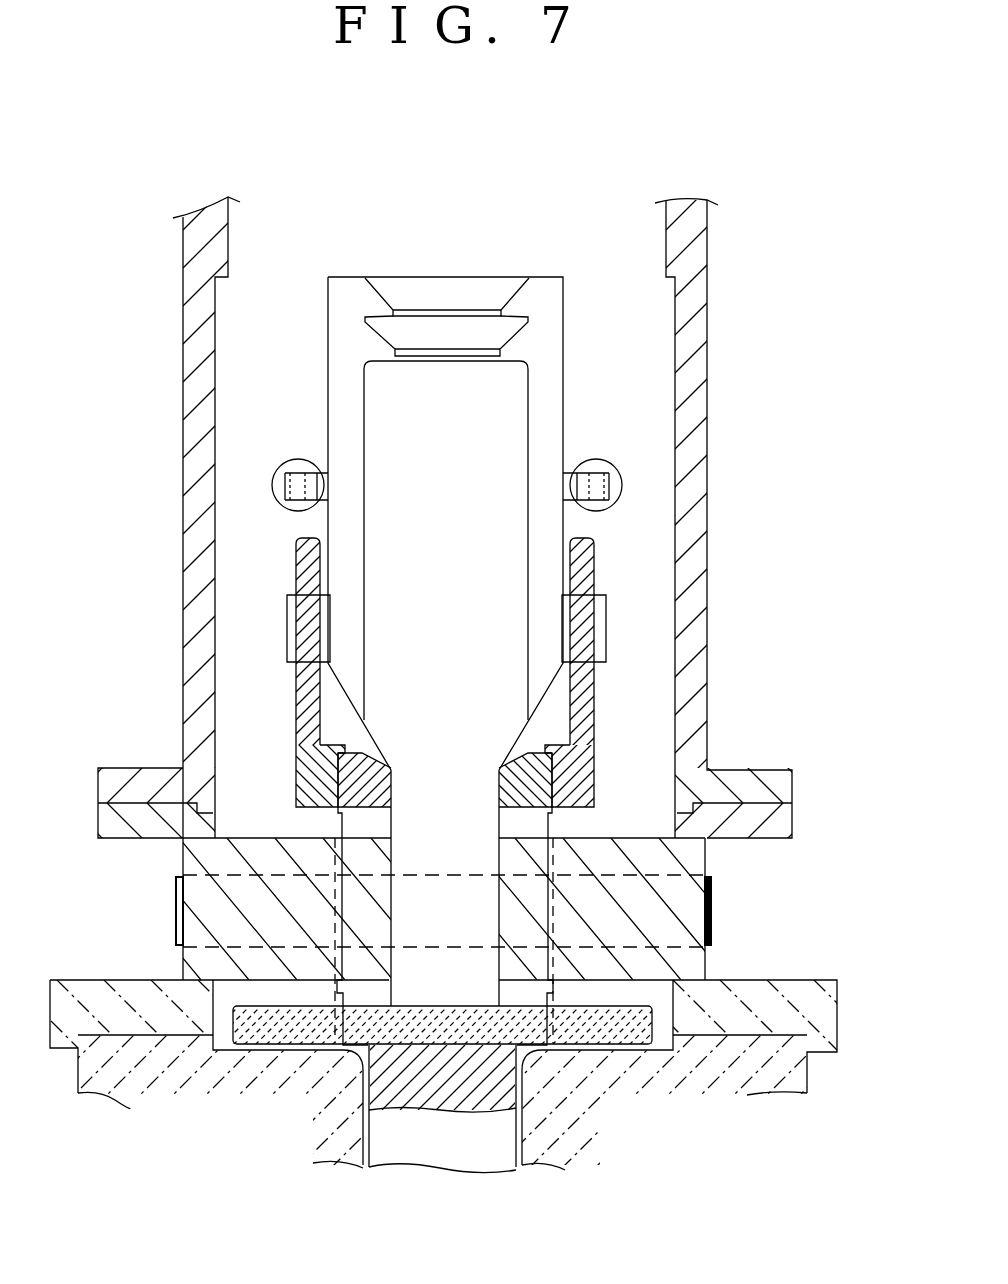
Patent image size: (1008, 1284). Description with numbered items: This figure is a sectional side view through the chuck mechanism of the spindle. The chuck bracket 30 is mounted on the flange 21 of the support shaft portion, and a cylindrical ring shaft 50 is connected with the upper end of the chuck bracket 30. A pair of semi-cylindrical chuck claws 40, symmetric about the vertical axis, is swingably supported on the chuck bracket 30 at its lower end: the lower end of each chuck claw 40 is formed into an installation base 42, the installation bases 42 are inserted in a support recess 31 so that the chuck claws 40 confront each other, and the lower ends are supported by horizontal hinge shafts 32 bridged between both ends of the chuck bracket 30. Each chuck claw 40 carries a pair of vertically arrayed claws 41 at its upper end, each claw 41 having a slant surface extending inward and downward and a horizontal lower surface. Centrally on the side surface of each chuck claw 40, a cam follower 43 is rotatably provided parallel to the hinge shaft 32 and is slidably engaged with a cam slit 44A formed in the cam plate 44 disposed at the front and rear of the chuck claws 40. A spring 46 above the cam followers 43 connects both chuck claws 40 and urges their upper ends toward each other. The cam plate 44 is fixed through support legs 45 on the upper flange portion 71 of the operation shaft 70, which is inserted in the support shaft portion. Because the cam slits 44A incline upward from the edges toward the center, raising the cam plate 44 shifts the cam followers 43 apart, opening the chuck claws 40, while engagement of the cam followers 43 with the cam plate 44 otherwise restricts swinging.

The flange 21 is at (812, 1055).
The chuck bracket 30 is at (706, 862).
The support recess 31 is at (405, 935).
The hinge shaft 32 is at (712, 904).
The chuck claw 40 is at (543, 277).
The claw 41 is at (474, 355).
The installation base 42 is at (434, 985).
The cam follower 43 is at (287, 625).
The cam plate 44 is at (296, 562).
The cam slit 44A is at (305, 692).
The support leg 45 is at (337, 824).
The spring 46 is at (298, 500).
The ring shaft 50 is at (706, 334).
The operation shaft 70 is at (413, 1146).
The upper flange portion 71 is at (623, 1027).